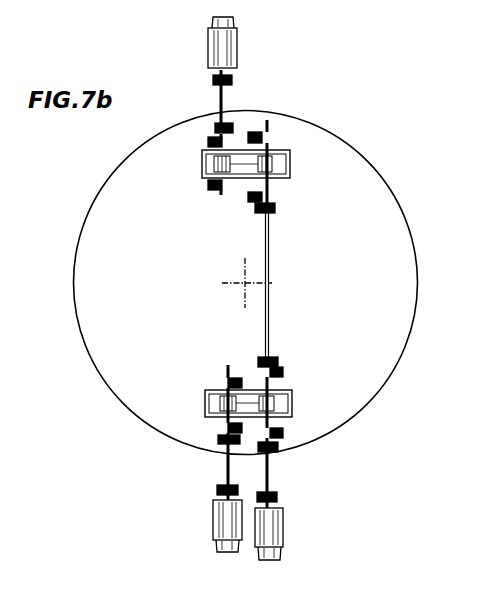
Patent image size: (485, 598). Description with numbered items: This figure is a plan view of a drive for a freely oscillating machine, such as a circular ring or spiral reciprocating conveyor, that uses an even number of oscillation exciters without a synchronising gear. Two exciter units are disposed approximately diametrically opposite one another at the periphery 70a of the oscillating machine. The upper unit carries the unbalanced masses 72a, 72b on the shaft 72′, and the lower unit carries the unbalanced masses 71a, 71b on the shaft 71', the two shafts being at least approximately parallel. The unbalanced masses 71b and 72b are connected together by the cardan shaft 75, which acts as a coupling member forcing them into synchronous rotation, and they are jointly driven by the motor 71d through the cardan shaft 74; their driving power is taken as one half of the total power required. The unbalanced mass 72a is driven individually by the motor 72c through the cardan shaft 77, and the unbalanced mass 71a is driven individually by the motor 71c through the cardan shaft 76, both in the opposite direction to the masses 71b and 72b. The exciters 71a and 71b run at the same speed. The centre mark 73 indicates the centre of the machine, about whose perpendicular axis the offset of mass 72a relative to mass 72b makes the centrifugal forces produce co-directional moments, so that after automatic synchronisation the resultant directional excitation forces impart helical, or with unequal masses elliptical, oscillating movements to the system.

The periphery of the oscillating machine 70a is at (398, 220).
The shaft 71' is at (248, 379).
The unbalanced mass 71a is at (230, 382).
The unbalanced mass 71b is at (282, 372).
The motor 71c is at (213, 520).
The motor 71d is at (283, 521).
The shaft 72′ is at (252, 173).
The unbalanced mass 72a is at (208, 185).
The unbalanced mass 72b is at (256, 130).
The motor 72c is at (210, 47).
The center axis 73 is at (245, 284).
The cardan shaft 74 is at (269, 470).
The cardan shaft 75 is at (268, 263).
The cardan shaft 76 is at (226, 470).
The cardan shaft 77 is at (218, 92).